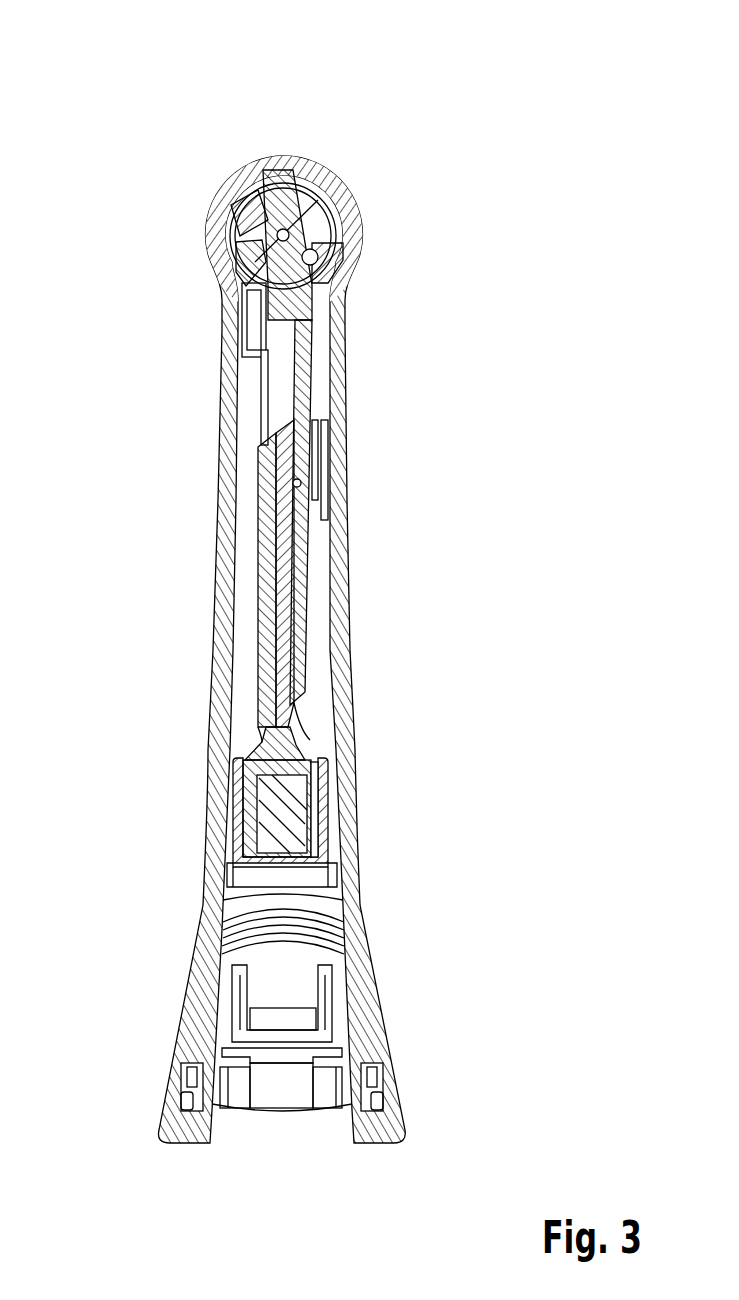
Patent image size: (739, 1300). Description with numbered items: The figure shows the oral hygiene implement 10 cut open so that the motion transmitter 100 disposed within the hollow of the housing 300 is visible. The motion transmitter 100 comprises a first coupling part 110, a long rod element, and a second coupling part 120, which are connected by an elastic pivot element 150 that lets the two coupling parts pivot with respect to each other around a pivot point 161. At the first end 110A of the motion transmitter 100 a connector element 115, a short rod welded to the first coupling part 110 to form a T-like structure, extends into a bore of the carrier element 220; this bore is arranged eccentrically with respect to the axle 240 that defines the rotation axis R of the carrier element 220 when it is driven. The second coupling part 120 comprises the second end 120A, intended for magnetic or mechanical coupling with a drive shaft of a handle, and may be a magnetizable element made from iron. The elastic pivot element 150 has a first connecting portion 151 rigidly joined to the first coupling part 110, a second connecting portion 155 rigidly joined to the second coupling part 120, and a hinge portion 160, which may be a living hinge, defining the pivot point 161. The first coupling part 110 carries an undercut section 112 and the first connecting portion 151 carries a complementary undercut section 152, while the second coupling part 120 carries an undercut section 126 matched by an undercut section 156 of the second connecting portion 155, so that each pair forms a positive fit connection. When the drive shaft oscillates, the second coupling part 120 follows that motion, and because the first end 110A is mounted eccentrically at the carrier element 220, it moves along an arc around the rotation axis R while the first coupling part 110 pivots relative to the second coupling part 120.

The oral hygiene implement 10 is at (361, 88).
The motion transmitter 100 is at (246, 671).
The first coupling part 110 is at (312, 390).
The first end 110A is at (337, 274).
The undercut section 112 is at (318, 470).
The connector element 115 is at (323, 247).
The second coupling part 120 is at (283, 826).
The second end 120A is at (340, 862).
The undercut section 126 is at (315, 778).
The elastic pivot element 150 is at (300, 677).
The first connecting portion 151 is at (236, 528).
The undercut section 152 is at (336, 497).
The second connecting portion 155 is at (336, 830).
The undercut section 156 is at (322, 808).
The hinge portion 160 is at (318, 727).
The pivot point 161 is at (283, 742).
The carrier element 220 is at (228, 206).
The axle 240 is at (212, 270).
The housing 300 is at (378, 1032).
The rotation axis R is at (330, 215).